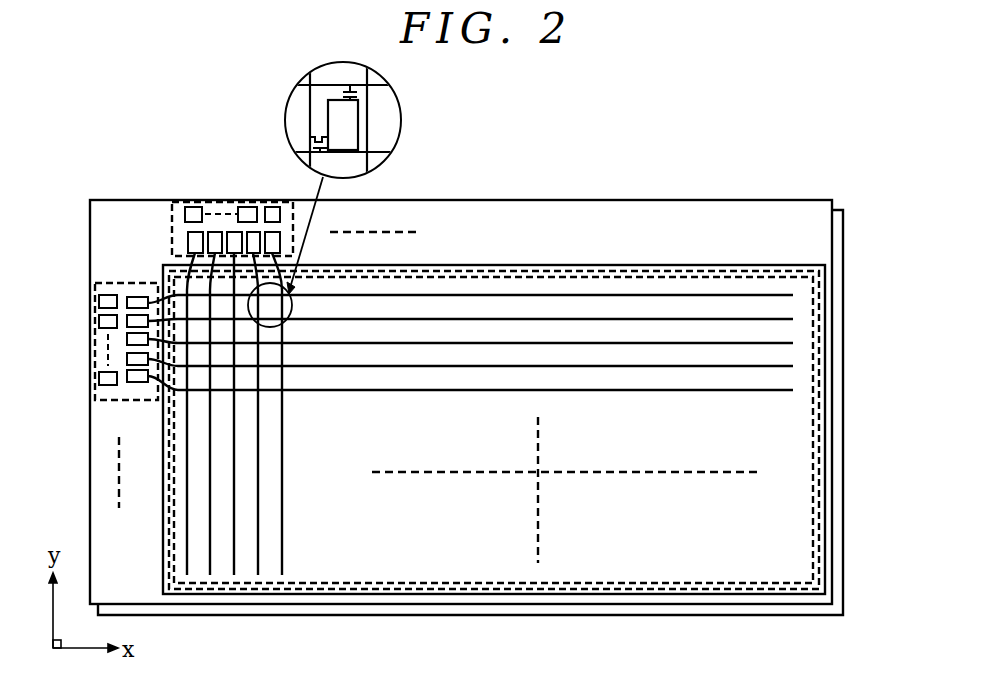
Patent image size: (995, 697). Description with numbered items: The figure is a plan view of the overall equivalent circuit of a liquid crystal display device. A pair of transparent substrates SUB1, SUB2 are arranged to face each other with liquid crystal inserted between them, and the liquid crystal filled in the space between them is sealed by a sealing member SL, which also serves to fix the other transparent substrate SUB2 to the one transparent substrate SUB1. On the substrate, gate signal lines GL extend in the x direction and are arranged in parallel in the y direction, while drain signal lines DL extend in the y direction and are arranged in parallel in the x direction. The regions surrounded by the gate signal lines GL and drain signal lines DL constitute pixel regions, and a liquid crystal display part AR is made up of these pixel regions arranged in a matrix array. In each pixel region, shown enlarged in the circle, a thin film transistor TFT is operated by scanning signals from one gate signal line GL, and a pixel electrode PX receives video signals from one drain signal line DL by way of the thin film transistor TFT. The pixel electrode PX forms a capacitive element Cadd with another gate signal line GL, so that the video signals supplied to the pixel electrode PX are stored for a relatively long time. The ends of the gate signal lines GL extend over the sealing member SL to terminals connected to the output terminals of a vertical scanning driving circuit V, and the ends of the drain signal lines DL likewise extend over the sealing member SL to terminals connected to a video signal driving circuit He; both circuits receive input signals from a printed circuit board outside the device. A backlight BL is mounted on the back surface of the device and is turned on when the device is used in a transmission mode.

The transparent substrate SUB1 is at (718, 198).
The transparent substrate SUB2 is at (617, 231).
The backlight BL is at (742, 615).
The sealing member SL is at (432, 594).
The liquid crystal display part AR is at (607, 550).
The video signal driving circuit He is at (172, 221).
The vertical scanning driving circuit V is at (108, 400).
The gate signal line GL is at (385, 148).
The drain signal line DL is at (310, 100).
The pixel electrode PX is at (358, 123).
The capacitive element Cadd is at (358, 93).
The thin film transistor TFT is at (310, 147).